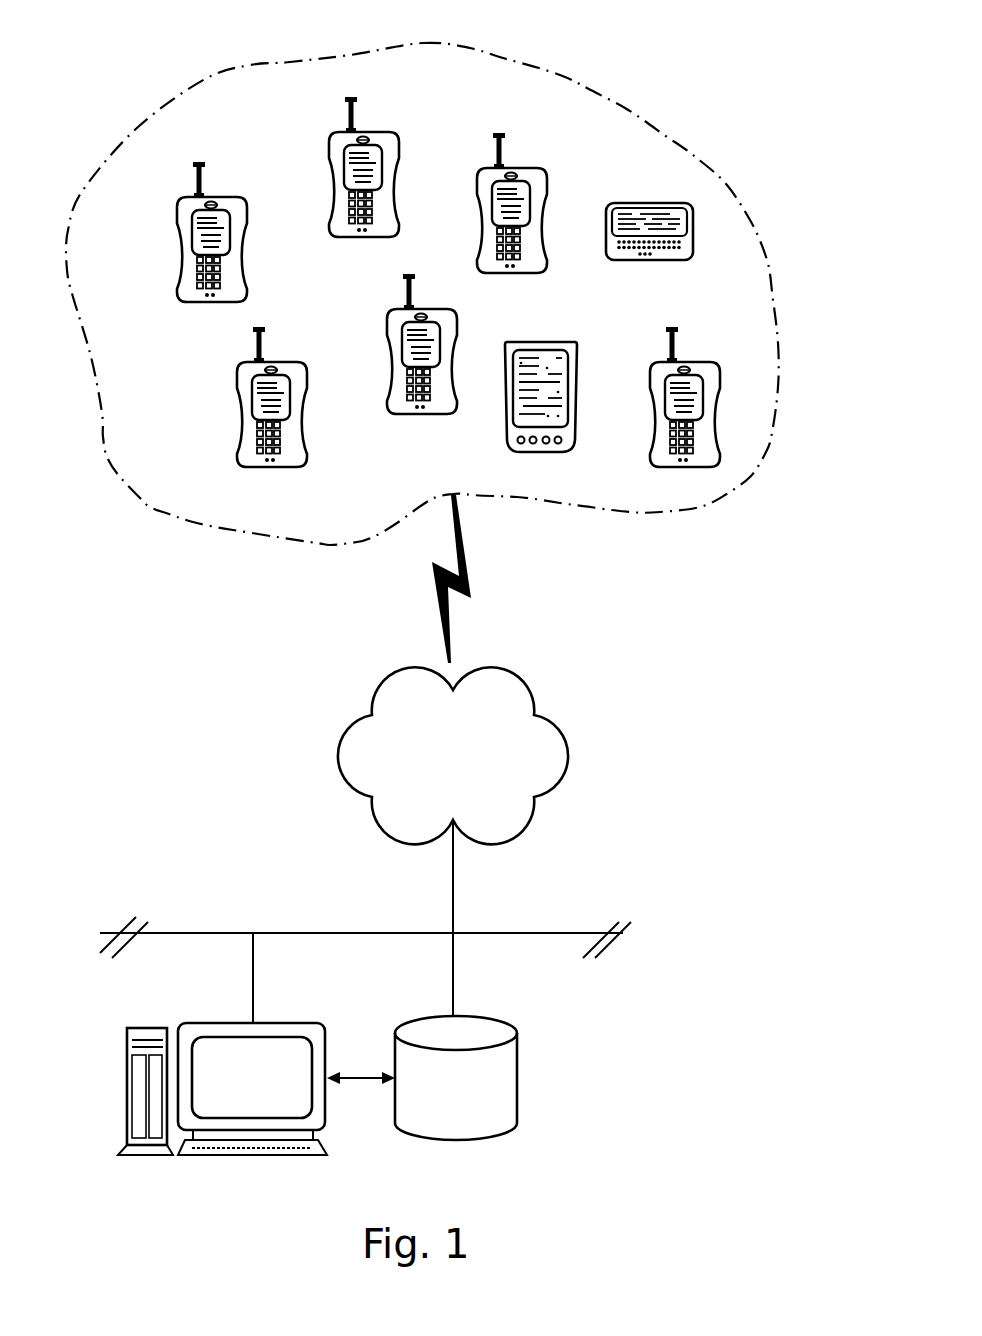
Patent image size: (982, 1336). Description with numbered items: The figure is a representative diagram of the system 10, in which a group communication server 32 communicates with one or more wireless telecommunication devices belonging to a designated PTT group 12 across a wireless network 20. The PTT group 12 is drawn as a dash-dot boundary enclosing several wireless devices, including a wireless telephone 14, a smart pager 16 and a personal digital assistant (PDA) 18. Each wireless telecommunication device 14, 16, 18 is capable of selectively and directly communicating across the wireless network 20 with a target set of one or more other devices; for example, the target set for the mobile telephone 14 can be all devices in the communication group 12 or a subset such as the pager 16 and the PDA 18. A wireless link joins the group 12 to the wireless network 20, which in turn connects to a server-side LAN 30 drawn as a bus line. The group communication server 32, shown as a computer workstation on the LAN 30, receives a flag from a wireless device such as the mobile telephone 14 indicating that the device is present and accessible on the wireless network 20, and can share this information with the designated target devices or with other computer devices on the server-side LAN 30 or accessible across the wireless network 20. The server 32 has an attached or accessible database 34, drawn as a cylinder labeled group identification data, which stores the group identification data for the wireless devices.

The system 10 is at (714, 62).
The PTT group 12 is at (138, 522).
The wireless telephone 14 is at (396, 132).
The smart pager 16 is at (652, 260).
The personal digital assistant (PDA) 18 is at (505, 417).
The wireless network 20 is at (567, 756).
The server-side LAN 30 is at (220, 933).
The group communication server 32 is at (225, 1022).
The database 34 is at (518, 1078).